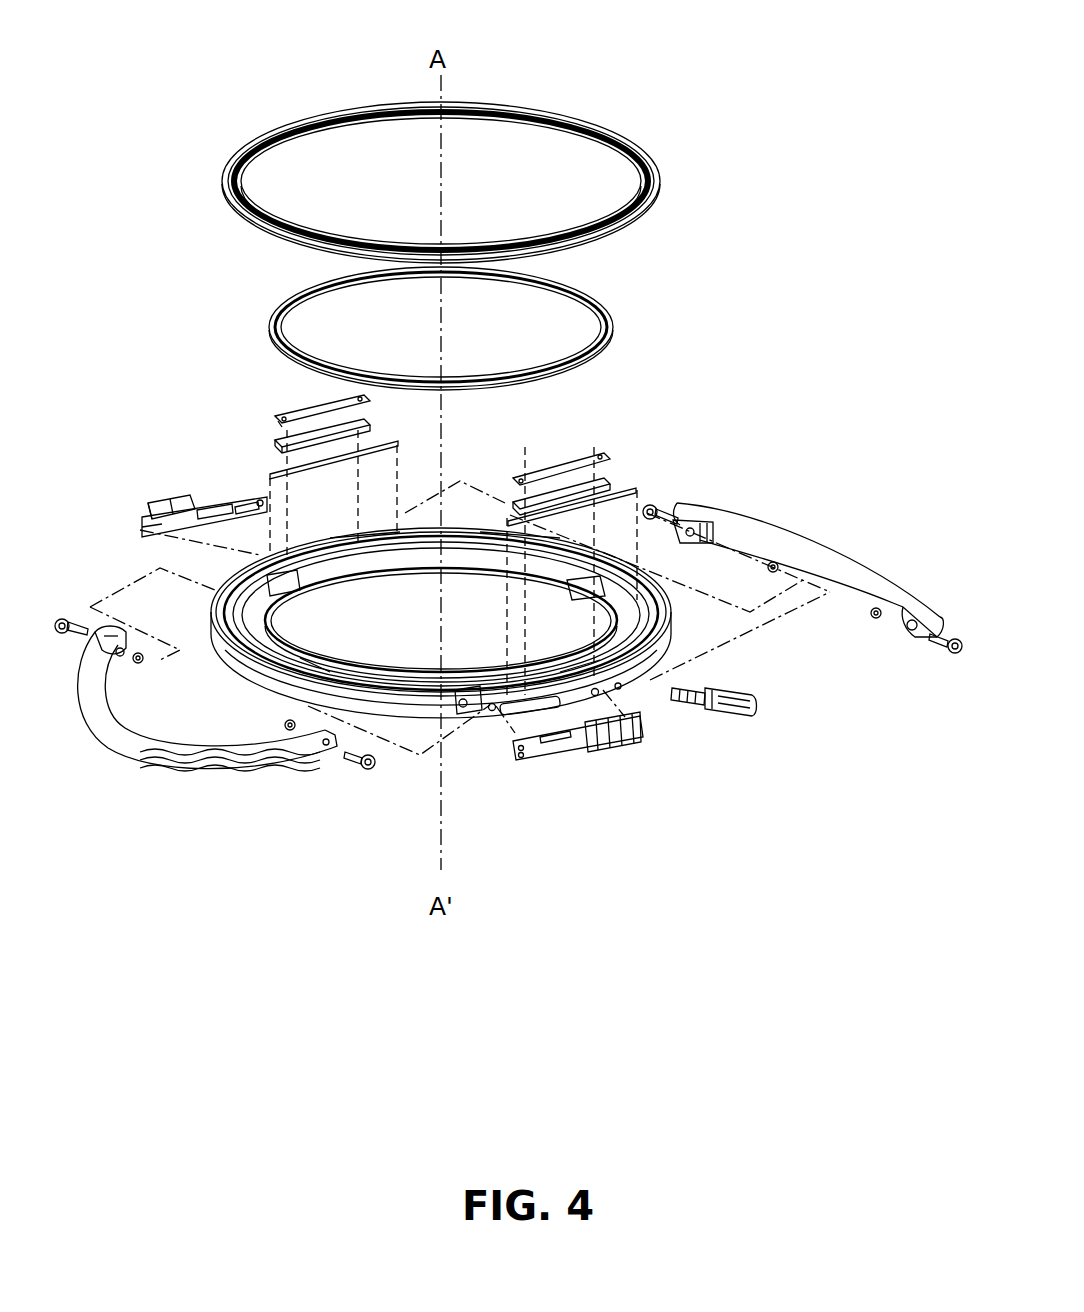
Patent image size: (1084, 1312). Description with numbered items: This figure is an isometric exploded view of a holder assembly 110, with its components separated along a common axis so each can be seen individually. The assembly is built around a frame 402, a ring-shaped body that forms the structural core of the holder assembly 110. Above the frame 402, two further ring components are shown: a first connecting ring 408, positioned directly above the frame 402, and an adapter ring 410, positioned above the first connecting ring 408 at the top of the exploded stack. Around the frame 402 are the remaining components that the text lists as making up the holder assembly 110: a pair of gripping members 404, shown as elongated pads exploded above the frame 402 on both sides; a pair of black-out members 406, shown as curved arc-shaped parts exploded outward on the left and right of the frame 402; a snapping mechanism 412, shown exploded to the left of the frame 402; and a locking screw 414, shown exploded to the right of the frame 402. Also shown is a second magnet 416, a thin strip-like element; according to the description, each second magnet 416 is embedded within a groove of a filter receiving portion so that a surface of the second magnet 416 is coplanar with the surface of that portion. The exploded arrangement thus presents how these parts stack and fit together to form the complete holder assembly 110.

The holder assembly 110 is at (95, 32).
The frame 402 is at (405, 630).
The pair of gripping members 404 is at (399, 450).
The pair of black-out members 406 is at (207, 737).
The first connecting ring 408 is at (487, 315).
The adapter ring 410 is at (483, 171).
The snapping mechanism 412 is at (162, 483).
The locking screw 414 is at (761, 689).
The second magnet 416 is at (394, 473).